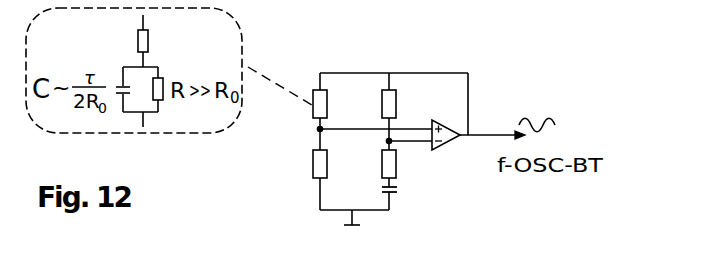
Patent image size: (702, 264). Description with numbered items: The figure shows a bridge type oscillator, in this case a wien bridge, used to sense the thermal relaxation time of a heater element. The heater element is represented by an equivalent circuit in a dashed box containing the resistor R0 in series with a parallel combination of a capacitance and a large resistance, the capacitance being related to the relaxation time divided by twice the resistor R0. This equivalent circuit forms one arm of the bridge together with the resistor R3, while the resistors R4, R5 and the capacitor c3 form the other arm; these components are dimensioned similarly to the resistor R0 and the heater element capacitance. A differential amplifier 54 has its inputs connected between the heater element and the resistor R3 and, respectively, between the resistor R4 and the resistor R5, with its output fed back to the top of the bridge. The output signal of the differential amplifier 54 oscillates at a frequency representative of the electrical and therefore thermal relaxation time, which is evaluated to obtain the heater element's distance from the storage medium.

The differential amplifier 54 is at (453, 137).
The resistor R3 is at (338, 164).
The resistor R4 is at (406, 104).
The resistor R5 is at (406, 168).
The capacitor c3 is at (404, 196).
The resistor R0 is at (160, 41).